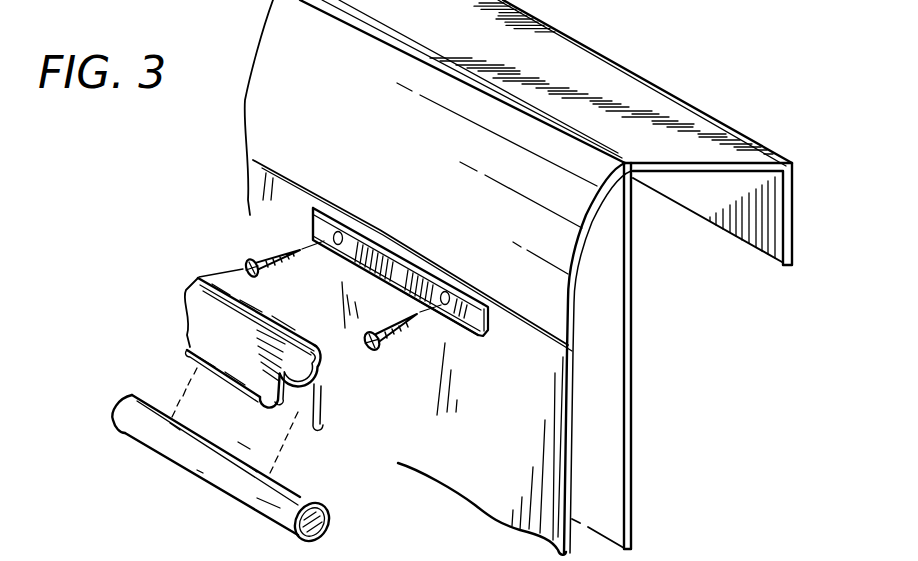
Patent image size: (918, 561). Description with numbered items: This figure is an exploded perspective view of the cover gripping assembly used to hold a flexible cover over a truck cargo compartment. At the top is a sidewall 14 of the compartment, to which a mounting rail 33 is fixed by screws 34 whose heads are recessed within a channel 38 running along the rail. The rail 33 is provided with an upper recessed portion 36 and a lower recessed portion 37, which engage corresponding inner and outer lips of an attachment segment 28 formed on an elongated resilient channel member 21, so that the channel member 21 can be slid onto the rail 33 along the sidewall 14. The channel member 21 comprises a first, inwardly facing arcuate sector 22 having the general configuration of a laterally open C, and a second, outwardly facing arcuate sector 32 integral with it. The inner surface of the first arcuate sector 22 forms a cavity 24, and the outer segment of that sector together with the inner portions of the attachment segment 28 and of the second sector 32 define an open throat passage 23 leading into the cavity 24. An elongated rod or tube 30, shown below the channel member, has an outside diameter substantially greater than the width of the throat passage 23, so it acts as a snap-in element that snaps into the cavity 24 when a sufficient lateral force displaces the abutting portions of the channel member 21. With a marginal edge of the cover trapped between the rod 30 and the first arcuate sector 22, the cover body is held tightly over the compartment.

The sidewall 14 is at (487, 483).
The elongated resilient channel member 21 is at (339, 403).
The first arcuate sector 22 is at (187, 308).
The throat passage 23 is at (288, 410).
The cavity 24 is at (297, 380).
The attachment segment 28 is at (311, 428).
The elongated rod or tube 30 is at (296, 498).
The second arcuate sector 32 is at (185, 360).
The mounting rail 33 is at (469, 337).
The screws 34 is at (273, 276).
The upper recessed portion 36 is at (487, 296).
The lower recessed portion 37 is at (485, 337).
The channel 38 is at (400, 270).